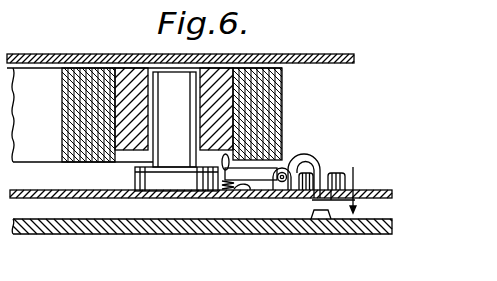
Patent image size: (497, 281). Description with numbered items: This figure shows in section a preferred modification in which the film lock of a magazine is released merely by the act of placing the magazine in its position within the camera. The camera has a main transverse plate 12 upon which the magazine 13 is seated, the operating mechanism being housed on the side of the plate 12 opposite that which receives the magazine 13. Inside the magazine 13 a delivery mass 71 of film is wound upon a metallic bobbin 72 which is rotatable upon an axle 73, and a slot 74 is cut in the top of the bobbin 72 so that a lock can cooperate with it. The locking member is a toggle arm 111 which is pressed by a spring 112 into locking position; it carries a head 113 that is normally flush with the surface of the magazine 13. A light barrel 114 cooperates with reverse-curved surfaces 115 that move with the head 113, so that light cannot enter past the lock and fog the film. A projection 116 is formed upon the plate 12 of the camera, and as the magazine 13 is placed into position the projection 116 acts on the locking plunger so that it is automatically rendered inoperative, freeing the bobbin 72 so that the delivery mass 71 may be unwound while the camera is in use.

The main transverse plate 12 is at (117, 230).
The magazine 13 is at (265, 55).
The delivery mass 71 is at (270, 113).
The metallic bobbin 72 is at (132, 68).
The axle 73 is at (173, 93).
The slot 74 is at (125, 158).
The toggle arm 111 is at (313, 155).
The spring 112 is at (216, 196).
The head 113 is at (355, 200).
The light barrel 114 is at (345, 180).
The reverse-curved surfaces 115 is at (340, 171).
The projection 116 is at (323, 219).